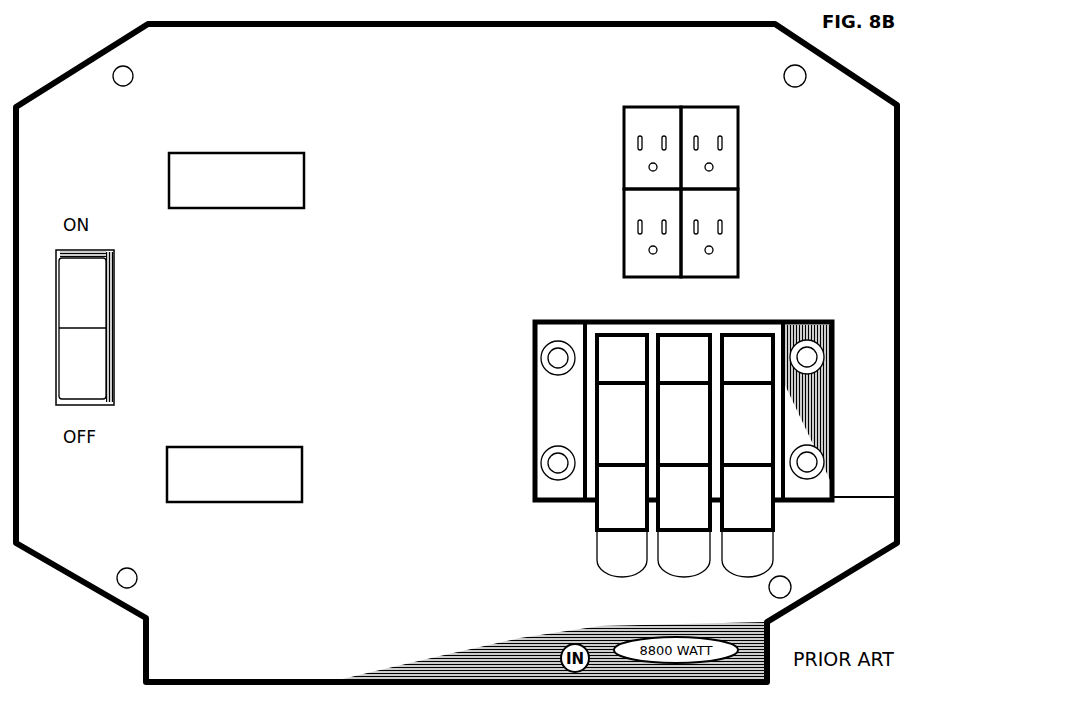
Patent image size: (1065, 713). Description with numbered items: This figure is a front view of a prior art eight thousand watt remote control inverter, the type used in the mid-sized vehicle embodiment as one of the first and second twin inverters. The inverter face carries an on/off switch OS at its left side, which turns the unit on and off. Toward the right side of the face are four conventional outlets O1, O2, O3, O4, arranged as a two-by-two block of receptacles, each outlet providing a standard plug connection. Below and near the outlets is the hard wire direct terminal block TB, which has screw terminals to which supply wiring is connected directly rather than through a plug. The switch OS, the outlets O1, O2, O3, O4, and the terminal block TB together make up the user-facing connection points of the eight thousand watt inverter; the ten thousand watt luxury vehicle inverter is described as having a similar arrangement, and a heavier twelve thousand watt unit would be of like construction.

The conventional outlet O1 is at (637, 178).
The conventional outlet O2 is at (728, 124).
The conventional outlet O3 is at (636, 267).
The conventional outlet O4 is at (725, 204).
The terminal block TB is at (541, 419).
The on/off switch OS is at (85, 327).